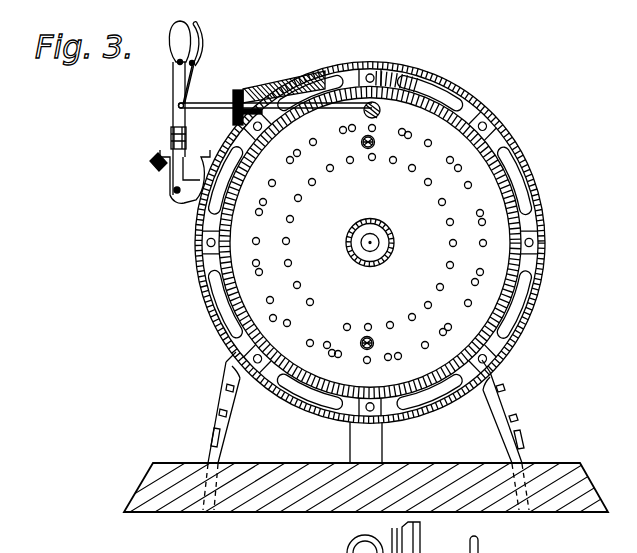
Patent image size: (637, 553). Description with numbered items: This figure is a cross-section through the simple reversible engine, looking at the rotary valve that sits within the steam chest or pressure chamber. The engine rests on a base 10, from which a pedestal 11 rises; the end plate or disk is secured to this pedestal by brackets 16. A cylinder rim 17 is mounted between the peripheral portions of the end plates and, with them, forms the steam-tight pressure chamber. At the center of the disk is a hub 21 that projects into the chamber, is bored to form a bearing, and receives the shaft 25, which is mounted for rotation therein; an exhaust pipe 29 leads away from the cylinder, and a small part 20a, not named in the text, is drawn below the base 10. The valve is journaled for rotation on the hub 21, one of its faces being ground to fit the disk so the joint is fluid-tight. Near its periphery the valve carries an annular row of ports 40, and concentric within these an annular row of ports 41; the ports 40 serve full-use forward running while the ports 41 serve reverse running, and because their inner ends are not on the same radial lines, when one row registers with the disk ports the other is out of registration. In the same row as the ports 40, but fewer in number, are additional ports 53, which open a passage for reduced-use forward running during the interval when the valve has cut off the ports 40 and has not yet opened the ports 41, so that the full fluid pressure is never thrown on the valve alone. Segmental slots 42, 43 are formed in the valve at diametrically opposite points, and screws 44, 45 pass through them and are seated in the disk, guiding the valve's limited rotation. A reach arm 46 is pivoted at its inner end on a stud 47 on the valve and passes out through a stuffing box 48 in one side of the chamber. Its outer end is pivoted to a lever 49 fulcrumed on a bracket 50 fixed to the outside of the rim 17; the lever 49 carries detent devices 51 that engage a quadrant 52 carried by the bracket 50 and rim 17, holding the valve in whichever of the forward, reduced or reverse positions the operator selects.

The base 10 is at (436, 472).
The pedestal 11 is at (226, 437).
The brackets 16 is at (228, 400).
The cylinder rim 17 is at (196, 247).
The shaft 20a is at (413, 546).
The hub 21 is at (370, 267).
The shaft 25 is at (380, 243).
The exhaust pipe 29 is at (355, 448).
The ports 40 is at (297, 158).
The ports 41 is at (426, 184).
The segmental slot 42 is at (375, 142).
The segmental slot 43 is at (373, 344).
The screw 44 is at (363, 143).
The screw 45 is at (362, 351).
The reach arm 46 is at (217, 104).
The stud 47 is at (396, 100).
The stuffing box 48 is at (245, 90).
The lever 49 is at (174, 81).
The bracket 50 is at (178, 186).
The detent devices 51 is at (200, 43).
The quadrant 52 is at (152, 164).
The ports 53 is at (258, 258).